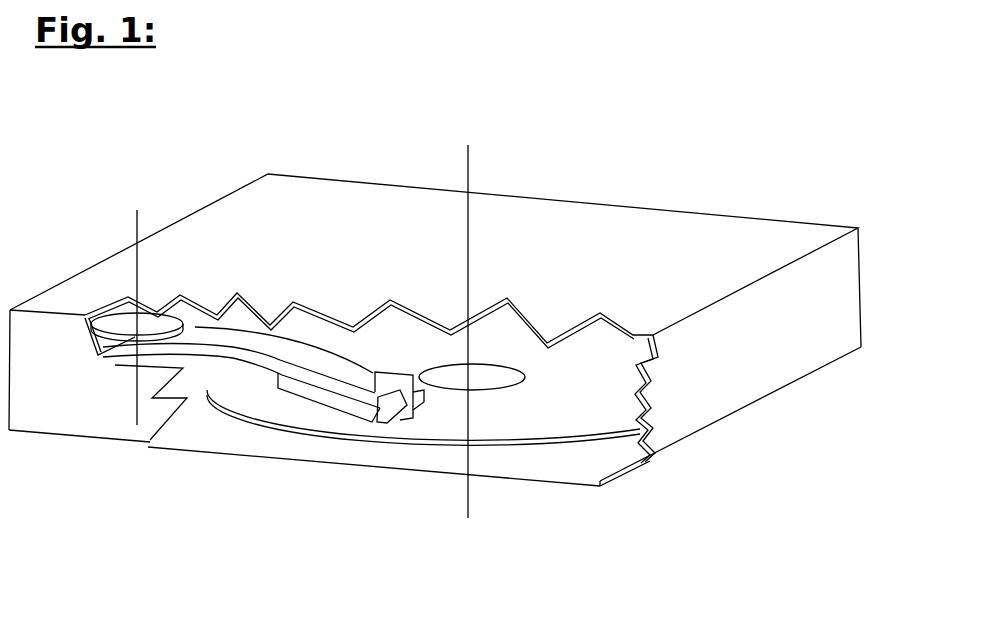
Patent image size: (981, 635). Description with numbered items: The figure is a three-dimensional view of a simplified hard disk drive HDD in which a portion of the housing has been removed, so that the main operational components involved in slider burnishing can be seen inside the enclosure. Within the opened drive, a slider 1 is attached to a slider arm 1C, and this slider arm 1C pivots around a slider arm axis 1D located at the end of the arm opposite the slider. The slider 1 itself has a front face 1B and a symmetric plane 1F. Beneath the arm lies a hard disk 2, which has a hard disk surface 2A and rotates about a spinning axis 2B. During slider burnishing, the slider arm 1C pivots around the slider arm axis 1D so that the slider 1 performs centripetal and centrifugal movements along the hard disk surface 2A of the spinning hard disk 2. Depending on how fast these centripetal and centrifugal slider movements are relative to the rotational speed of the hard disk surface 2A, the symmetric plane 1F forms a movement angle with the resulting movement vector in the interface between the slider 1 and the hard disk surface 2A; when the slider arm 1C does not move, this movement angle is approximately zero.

The hard disk drive HDD is at (642, 217).
The slider 1 is at (325, 396).
The front face 1B is at (424, 404).
The slider arm 1C is at (253, 338).
The slider arm axis 1D is at (135, 232).
The symmetric plane 1F is at (400, 390).
The hard disk 2 is at (540, 440).
The hard disk surface 2A is at (592, 398).
The spinning axis 2B is at (468, 160).